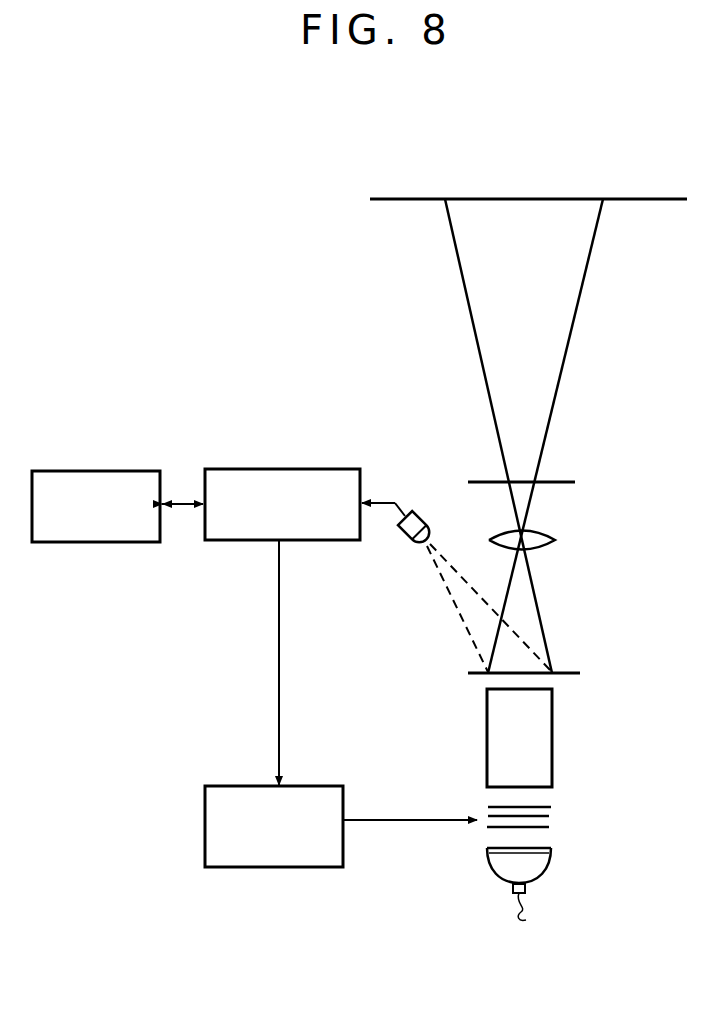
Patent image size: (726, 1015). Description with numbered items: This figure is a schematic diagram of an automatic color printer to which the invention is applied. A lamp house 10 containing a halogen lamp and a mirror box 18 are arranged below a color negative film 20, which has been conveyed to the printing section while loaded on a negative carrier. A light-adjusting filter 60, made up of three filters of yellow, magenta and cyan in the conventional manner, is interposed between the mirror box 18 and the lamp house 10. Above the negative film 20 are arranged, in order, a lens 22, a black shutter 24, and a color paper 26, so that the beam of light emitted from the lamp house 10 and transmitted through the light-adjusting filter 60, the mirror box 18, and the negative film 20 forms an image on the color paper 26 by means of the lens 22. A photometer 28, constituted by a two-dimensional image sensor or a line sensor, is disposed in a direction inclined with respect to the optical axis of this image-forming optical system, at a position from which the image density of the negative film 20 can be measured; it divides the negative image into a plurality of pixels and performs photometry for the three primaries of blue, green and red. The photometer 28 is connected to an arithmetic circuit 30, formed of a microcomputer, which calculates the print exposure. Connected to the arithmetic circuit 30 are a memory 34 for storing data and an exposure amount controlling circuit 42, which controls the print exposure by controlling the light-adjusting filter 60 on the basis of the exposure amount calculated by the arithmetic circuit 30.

The lamp house 10 is at (548, 870).
The mirror box 18 is at (553, 738).
The color negative film 20 is at (555, 672).
The lens 22 is at (538, 549).
The black shutter 24 is at (553, 483).
The color paper 26 is at (630, 200).
The photometer 28 is at (407, 540).
The arithmetic circuit 30 is at (272, 469).
The memory 34 is at (97, 471).
The exposure amount controlling circuit 42 is at (278, 867).
The light-adjusting filter 60 is at (556, 818).